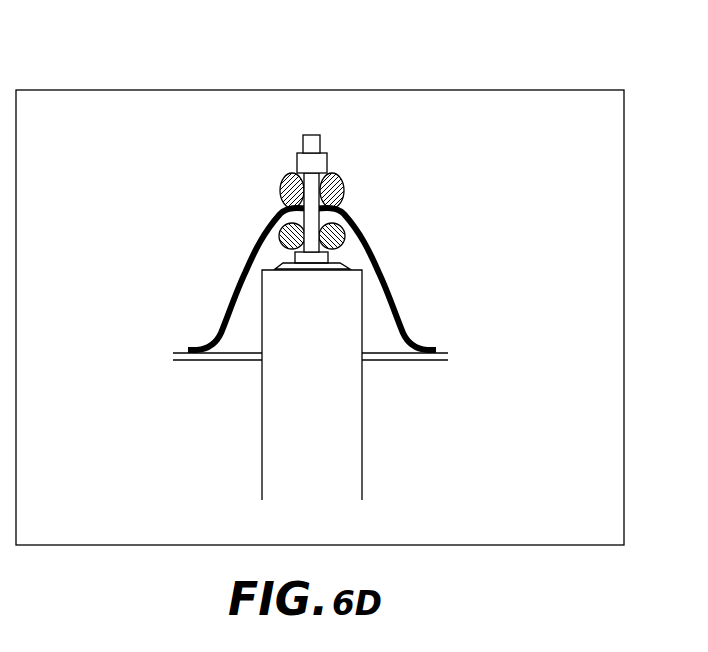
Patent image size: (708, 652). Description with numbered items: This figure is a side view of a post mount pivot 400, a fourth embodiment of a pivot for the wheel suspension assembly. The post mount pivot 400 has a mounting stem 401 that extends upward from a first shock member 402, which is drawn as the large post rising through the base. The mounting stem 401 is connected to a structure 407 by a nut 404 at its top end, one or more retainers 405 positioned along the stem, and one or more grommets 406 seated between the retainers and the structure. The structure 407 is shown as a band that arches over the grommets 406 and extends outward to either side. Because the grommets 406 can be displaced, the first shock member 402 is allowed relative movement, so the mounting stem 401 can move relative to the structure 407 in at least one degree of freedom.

The post mount pivot 400 is at (536, 85).
The mounting stem 401 is at (312, 147).
The first shock member 402 is at (333, 428).
The nut 404 is at (306, 163).
The retainers 405 is at (288, 190).
The grommets 406 is at (292, 235).
The structure 407 is at (243, 268).